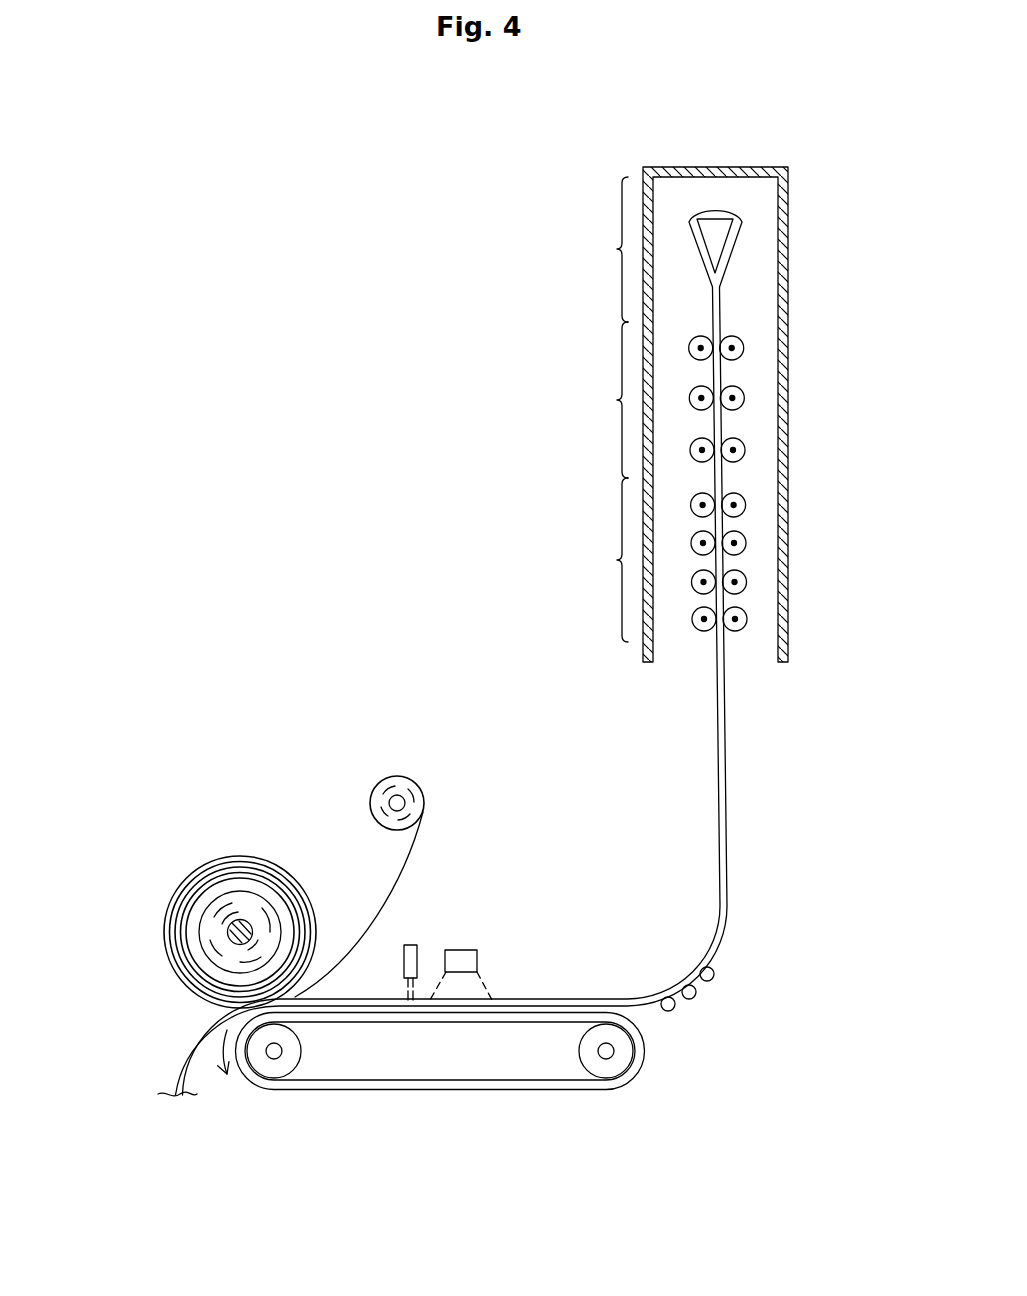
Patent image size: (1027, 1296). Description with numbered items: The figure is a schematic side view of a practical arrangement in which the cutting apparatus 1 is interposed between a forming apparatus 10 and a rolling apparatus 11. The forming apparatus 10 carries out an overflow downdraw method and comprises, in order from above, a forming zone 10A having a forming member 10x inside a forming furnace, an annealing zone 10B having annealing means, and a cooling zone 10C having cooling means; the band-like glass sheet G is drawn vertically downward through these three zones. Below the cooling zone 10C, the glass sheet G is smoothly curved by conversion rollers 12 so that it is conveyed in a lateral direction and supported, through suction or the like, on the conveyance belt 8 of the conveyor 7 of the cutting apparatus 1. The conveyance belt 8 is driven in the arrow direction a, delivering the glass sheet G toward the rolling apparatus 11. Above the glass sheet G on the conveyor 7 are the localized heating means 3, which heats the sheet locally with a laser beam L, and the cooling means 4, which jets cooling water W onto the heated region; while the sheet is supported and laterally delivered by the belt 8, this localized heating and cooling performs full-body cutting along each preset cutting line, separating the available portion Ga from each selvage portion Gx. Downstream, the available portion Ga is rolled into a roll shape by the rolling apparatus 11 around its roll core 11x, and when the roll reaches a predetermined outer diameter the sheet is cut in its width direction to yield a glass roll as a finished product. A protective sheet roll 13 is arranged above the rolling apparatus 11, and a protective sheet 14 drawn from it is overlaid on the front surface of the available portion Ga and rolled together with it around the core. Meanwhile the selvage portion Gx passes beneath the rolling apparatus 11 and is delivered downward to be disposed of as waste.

The cutting apparatus 1 is at (532, 918).
The localized heating means 3 is at (466, 948).
The cooling means 4 is at (414, 943).
The conveyor 7 is at (381, 1055).
The conveyance belt 8 is at (460, 1021).
The forming apparatus 10 is at (806, 180).
The forming zone 10A is at (596, 249).
The annealing zone 10B is at (655, 400).
The cooling zone 10C is at (656, 560).
The forming member 10x is at (718, 240).
The rolling apparatus 11 is at (212, 848).
The winding core 11x is at (228, 931).
The conversion rollers 12 is at (668, 1011).
The protective sheet roll 13 is at (413, 772).
The protective sheet 14 is at (406, 877).
The band-like glass sheet G is at (720, 800).
The available portion Ga is at (194, 992).
The selvage portion Gx is at (186, 1055).
The laser beam L is at (487, 992).
The cooling water W is at (404, 986).
The arrow direction a is at (232, 1064).